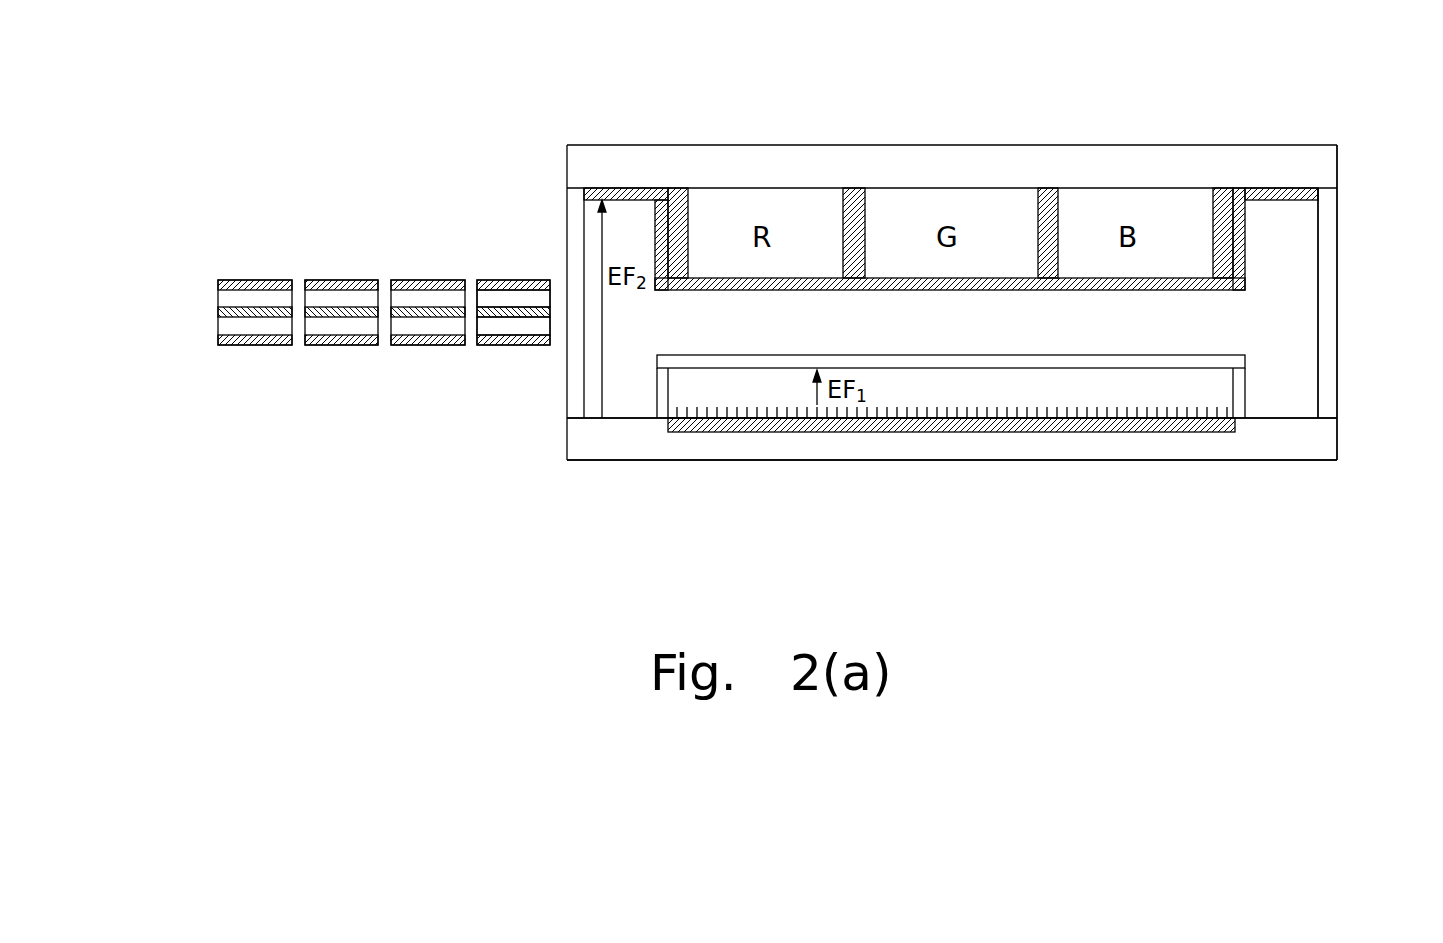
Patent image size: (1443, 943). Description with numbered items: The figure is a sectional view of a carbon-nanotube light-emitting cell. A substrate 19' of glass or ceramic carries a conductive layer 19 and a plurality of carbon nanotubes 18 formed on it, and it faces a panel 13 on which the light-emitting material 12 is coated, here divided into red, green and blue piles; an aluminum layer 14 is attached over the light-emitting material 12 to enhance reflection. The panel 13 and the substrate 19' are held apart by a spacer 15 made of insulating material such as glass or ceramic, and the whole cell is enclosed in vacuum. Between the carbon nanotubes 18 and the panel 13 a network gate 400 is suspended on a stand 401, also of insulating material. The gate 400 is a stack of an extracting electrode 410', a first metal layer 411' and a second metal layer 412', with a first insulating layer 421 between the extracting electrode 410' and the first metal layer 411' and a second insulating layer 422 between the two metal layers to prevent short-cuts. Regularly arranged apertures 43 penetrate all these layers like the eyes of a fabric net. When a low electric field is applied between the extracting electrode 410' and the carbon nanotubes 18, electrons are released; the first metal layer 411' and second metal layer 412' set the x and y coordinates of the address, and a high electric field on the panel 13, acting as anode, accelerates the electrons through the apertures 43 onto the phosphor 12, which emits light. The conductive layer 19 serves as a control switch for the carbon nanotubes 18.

The light-emitting material 12 is at (1093, 207).
The panel 13 is at (670, 162).
The aluminum layer 14 is at (1303, 190).
The spacer 15 is at (1327, 323).
The carbon nanotube 18 is at (1052, 410).
The conductive layer 19 is at (951, 496).
The substrate 19' is at (952, 494).
The gate 400 is at (360, 343).
The stand 401 is at (1242, 388).
The apertures 43 is at (383, 290).
The extracting electrode 410' is at (198, 352).
The first metal layer 411' is at (176, 310).
The second metal layer 412' is at (212, 280).
The first insulating layer 421 is at (500, 371).
The second insulating layer 422 is at (495, 297).